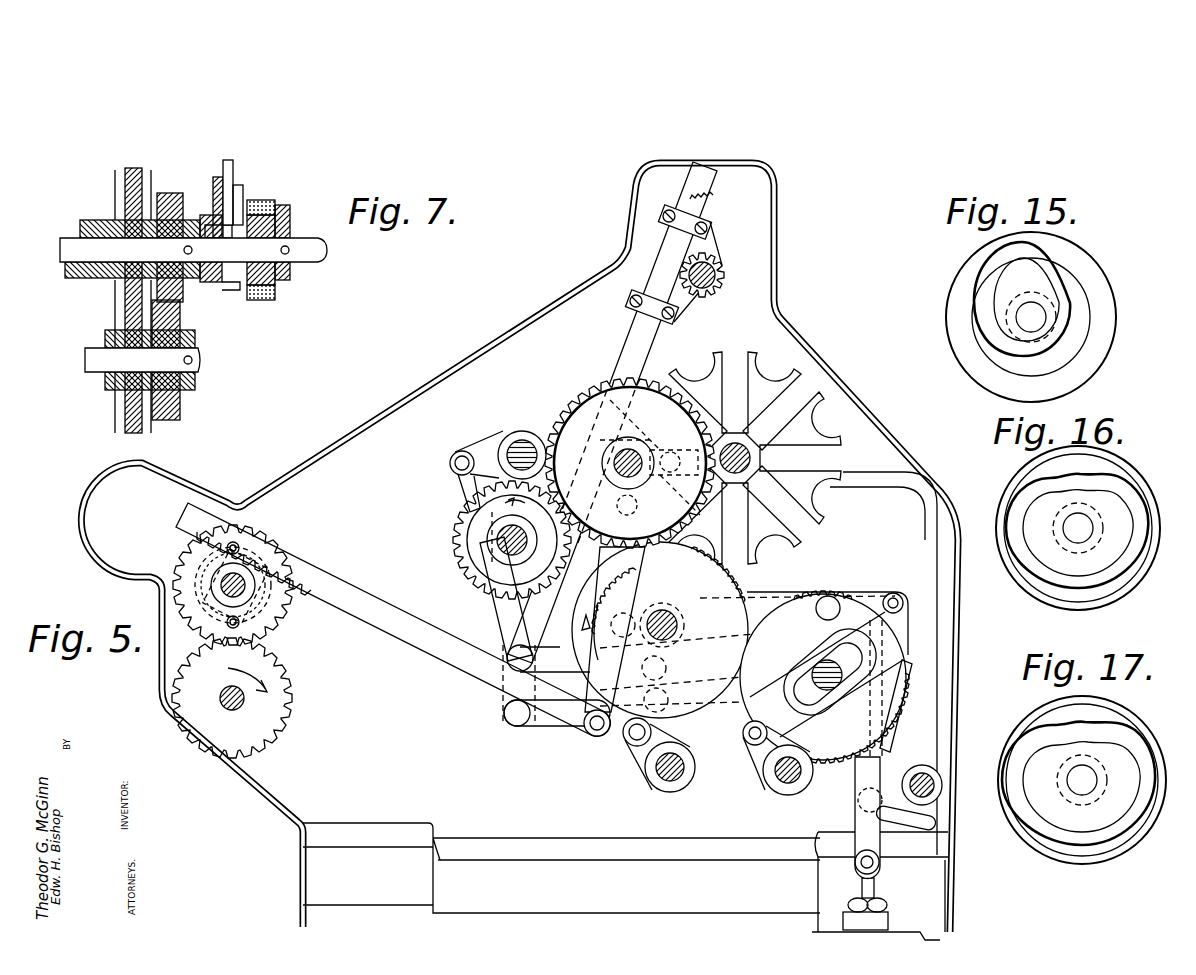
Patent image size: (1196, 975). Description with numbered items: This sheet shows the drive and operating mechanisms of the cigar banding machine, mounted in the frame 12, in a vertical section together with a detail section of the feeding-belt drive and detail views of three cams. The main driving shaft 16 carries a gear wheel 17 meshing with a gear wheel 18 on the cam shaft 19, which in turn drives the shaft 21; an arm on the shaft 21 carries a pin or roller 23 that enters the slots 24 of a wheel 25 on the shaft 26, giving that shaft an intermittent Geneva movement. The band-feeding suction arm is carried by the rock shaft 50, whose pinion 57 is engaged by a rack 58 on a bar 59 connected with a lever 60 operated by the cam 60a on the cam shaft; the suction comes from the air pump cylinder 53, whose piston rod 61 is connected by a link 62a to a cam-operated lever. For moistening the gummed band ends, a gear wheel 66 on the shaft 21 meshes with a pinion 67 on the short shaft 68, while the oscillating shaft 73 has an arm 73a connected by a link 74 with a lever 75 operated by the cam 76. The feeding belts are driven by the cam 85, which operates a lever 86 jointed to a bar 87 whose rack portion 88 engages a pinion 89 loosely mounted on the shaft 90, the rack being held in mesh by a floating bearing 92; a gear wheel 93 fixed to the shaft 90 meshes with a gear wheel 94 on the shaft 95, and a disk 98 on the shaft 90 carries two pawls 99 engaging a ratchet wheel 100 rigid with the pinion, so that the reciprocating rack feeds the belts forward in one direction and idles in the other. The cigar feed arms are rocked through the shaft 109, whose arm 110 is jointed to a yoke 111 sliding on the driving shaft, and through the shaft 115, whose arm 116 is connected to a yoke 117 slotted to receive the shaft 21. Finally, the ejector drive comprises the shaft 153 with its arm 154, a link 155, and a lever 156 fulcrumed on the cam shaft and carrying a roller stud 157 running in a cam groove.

In FIG. 7, the frame 12 is at (125, 195).
In FIG. 7, the floating bearing 92 is at (215, 215).
In FIG. 5, the floating bearing 92 is at (285, 558).
In FIG. 7, the bar 87 is at (233, 170).
In FIG. 5, the bar 87 is at (400, 646).
In FIG. 7, the pawls 99 is at (264, 205).
In FIG. 5, the pawls 99 is at (238, 545).
In FIG. 7, the ratchet wheel 100 is at (280, 212).
In FIG. 5, the ratchet wheel 100 is at (252, 562).
In FIG. 7, the gear wheel 93 is at (183, 292).
In FIG. 5, the gear wheel 93 is at (190, 565).
In FIG. 7, the pinion 89 is at (226, 285).
In FIG. 7, the disk 98 is at (280, 295).
In FIG. 7, the shaft 90 is at (310, 262).
In FIG. 5, the shaft 90 is at (240, 596).
In FIG. 7, the shaft 95 is at (200, 362).
In FIG. 5, the shaft 95 is at (236, 706).
In FIG. 7, the gear wheel 94 is at (180, 405).
In FIG. 5, the gear wheel 94 is at (292, 716).
In FIG. 5, the rack 58 is at (707, 206).
In FIG. 5, the pinion 57 is at (720, 262).
In FIG. 5, the rock shaft 50 is at (722, 280).
In FIG. 5, the bar 59 is at (646, 352).
In FIG. 5, the slots 24 is at (738, 366).
In FIG. 5, the wheel 25 is at (822, 398).
In FIG. 5, the shaft 26 is at (750, 456).
In FIG. 5, the pin or roller 23 is at (680, 473).
In FIG. 5, the shaft 21 is at (624, 458).
In FIG. 5, the oscillating shaft 73 is at (508, 445).
In FIG. 5, the gear wheel 66 is at (556, 430).
In FIG. 5, the arm 73a is at (478, 452).
In FIG. 5, the link 74 is at (464, 508).
In FIG. 5, the pinion 67 is at (458, 548).
In FIG. 5, the short shaft 68 is at (492, 578).
In FIG. 5, the lever 86 is at (648, 574).
In FIG. 5, the lever 60 is at (572, 605).
In FIG. 5, the cam shaft 19 is at (680, 620).
In FIG. 5, the gear wheel 18 is at (742, 586).
In FIG. 5, the lever 156 is at (775, 606).
In FIG. 5, the roller stud 157 is at (832, 600).
In FIG. 5, the gear wheel 17 is at (842, 600).
In FIG. 5, the yoke 111 is at (838, 700).
In FIG. 5, the main driving shaft 16 is at (830, 706).
In FIG. 5, the arm 110 is at (752, 746).
In FIG. 5, the shaft 109 is at (784, 784).
In FIG. 5, the link 62a is at (862, 788).
In FIG. 5, the link 155 is at (905, 752).
In FIG. 5, the shaft 153 is at (938, 792).
In FIG. 5, the arm 154 is at (905, 812).
In FIG. 5, the rod 61 is at (874, 886).
In FIG. 5, the cylinder 53 is at (920, 928).
In FIG. 5, the shaft 115 is at (662, 776).
In FIG. 5, the arm 116 is at (630, 746).
In FIG. 5, the yoke 117 is at (597, 736).
In FIG. 5, the lever 75 is at (550, 727).
In FIG. 5, the rack portion 88 is at (300, 596).
In FIG. 15, the cam 85 is at (950, 308).
In FIG. 16, the cam 76 is at (1124, 590).
In FIG. 17, the cam 60a is at (1076, 848).